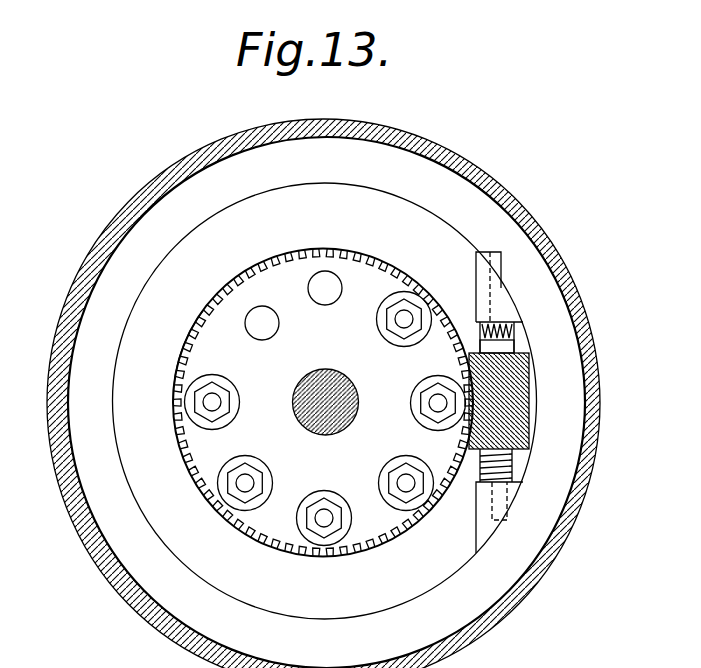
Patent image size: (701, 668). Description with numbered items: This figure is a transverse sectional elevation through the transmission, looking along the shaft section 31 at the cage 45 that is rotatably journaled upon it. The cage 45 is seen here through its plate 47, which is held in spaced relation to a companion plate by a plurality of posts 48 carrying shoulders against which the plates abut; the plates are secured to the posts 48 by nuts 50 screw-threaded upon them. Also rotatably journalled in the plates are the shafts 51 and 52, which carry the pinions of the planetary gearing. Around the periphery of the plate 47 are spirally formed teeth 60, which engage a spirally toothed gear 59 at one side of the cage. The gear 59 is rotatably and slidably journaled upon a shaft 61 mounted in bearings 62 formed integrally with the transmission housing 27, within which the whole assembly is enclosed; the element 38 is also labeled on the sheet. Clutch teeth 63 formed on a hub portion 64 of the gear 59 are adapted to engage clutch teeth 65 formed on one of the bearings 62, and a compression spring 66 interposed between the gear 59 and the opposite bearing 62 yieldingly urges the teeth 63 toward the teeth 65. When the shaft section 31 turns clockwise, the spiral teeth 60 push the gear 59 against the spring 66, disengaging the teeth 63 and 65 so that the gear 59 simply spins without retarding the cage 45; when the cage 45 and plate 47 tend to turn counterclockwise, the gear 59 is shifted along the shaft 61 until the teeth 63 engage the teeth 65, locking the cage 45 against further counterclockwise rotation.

The transmission housing 27 is at (563, 548).
The shaft section 31 is at (325, 372).
The housing wall 38 is at (322, 425).
The cage 45 is at (182, 446).
The plate 47 is at (370, 538).
The posts 48 is at (438, 410).
The nuts 50 is at (438, 395).
The shaft 51 is at (332, 298).
The shaft 52 is at (262, 321).
The spirally toothed gear 59 is at (520, 402).
The spirally formed teeth 60 is at (470, 486).
The shaft 61 is at (510, 500).
The bearings 62 is at (484, 282).
The clutch teeth 63 is at (508, 334).
The hub portion 64 is at (514, 351).
The clutch teeth 65 is at (497, 322).
The compression spring 66 is at (513, 467).